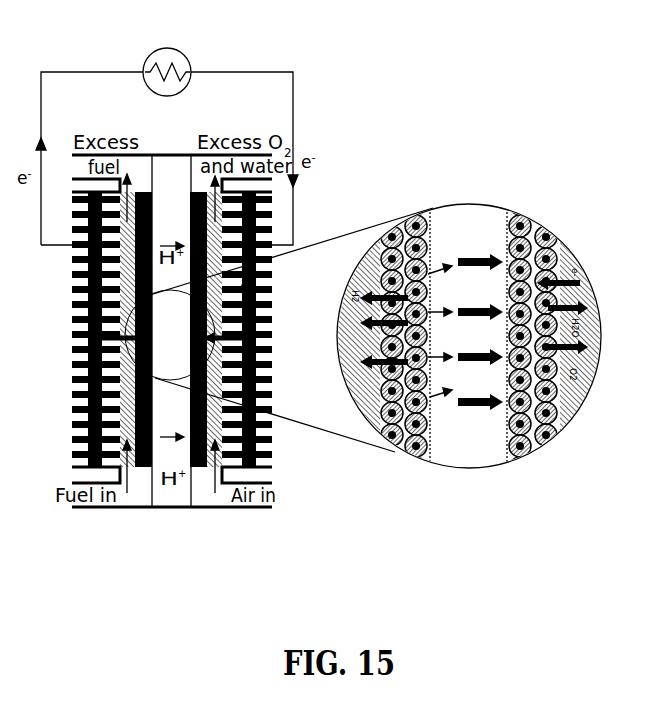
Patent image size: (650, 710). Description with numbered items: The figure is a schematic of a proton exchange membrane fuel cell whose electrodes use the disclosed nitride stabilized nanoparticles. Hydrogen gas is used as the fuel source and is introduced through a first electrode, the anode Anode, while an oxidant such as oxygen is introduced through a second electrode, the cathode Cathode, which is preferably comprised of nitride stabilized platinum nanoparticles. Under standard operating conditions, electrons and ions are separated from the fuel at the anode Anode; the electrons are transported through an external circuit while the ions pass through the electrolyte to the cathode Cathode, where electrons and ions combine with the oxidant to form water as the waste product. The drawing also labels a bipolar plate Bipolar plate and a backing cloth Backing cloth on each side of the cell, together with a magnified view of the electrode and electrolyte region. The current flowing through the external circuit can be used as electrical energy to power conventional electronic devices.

The bipolar plate Bipolar plate is at (279, 451).
The backing cloth Backing cloth is at (218, 380).
The anode Anode is at (417, 458).
The cathode Cathode is at (533, 460).